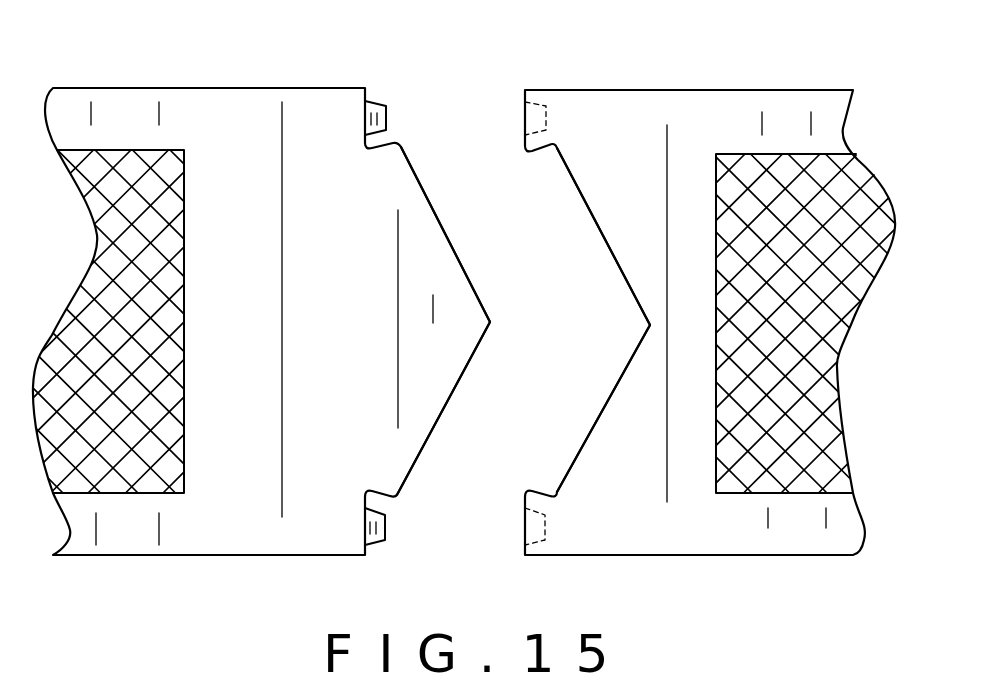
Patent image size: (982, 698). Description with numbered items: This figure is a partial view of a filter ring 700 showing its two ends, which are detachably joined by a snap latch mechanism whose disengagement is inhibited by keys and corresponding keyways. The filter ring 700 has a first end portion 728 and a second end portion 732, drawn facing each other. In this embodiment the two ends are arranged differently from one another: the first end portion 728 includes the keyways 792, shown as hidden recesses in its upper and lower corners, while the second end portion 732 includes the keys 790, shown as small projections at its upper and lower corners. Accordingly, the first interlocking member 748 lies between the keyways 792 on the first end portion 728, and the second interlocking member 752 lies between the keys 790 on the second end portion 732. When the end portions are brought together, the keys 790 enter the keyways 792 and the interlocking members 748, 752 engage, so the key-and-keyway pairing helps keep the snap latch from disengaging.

The filter ring 700 is at (732, 60).
The second end portion 732 is at (253, 87).
The second interlocking member 752 is at (423, 190).
The key 790 is at (386, 527).
The first end portion 728 is at (614, 90).
The first interlocking member 748 is at (587, 207).
The keyway 792 is at (546, 527).